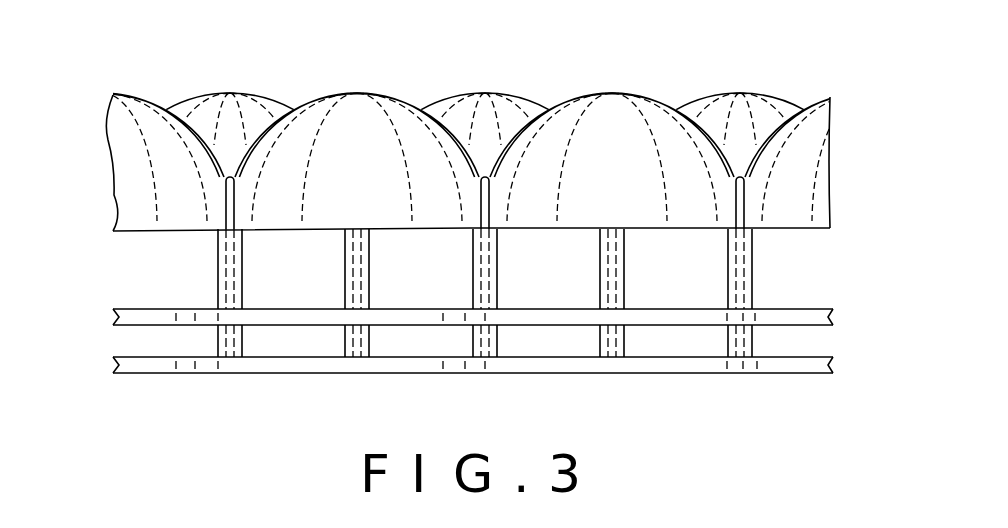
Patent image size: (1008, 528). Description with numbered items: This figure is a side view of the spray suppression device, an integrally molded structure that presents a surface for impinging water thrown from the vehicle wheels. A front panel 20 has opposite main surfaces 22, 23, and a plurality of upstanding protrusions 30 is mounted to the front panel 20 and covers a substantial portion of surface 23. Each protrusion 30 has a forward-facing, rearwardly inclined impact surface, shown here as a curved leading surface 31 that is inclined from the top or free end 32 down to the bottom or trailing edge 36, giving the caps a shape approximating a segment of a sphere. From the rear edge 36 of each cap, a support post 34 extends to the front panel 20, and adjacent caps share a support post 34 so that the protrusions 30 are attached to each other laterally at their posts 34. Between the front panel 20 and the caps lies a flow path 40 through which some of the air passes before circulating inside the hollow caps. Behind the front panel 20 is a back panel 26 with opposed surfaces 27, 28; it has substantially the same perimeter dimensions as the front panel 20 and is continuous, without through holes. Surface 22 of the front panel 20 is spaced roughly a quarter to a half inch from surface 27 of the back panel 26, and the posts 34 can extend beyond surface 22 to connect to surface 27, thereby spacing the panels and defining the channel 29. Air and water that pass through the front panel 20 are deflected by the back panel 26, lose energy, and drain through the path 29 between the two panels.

The front panel 20 is at (835, 310).
The main surface of front panel 22 is at (814, 326).
The main surface of front panel 23 is at (795, 304).
The back panel 26 is at (834, 363).
The surface of back panel 27 is at (645, 356).
The surface of back panel 28 is at (183, 377).
The flow path or channel 29 is at (123, 342).
The protrusion 30 is at (387, 97).
The leading surface 31 is at (252, 113).
The free end 32 is at (611, 92).
The support post 34 is at (740, 262).
The rear edge 36 is at (692, 231).
The flow path 40 is at (305, 292).